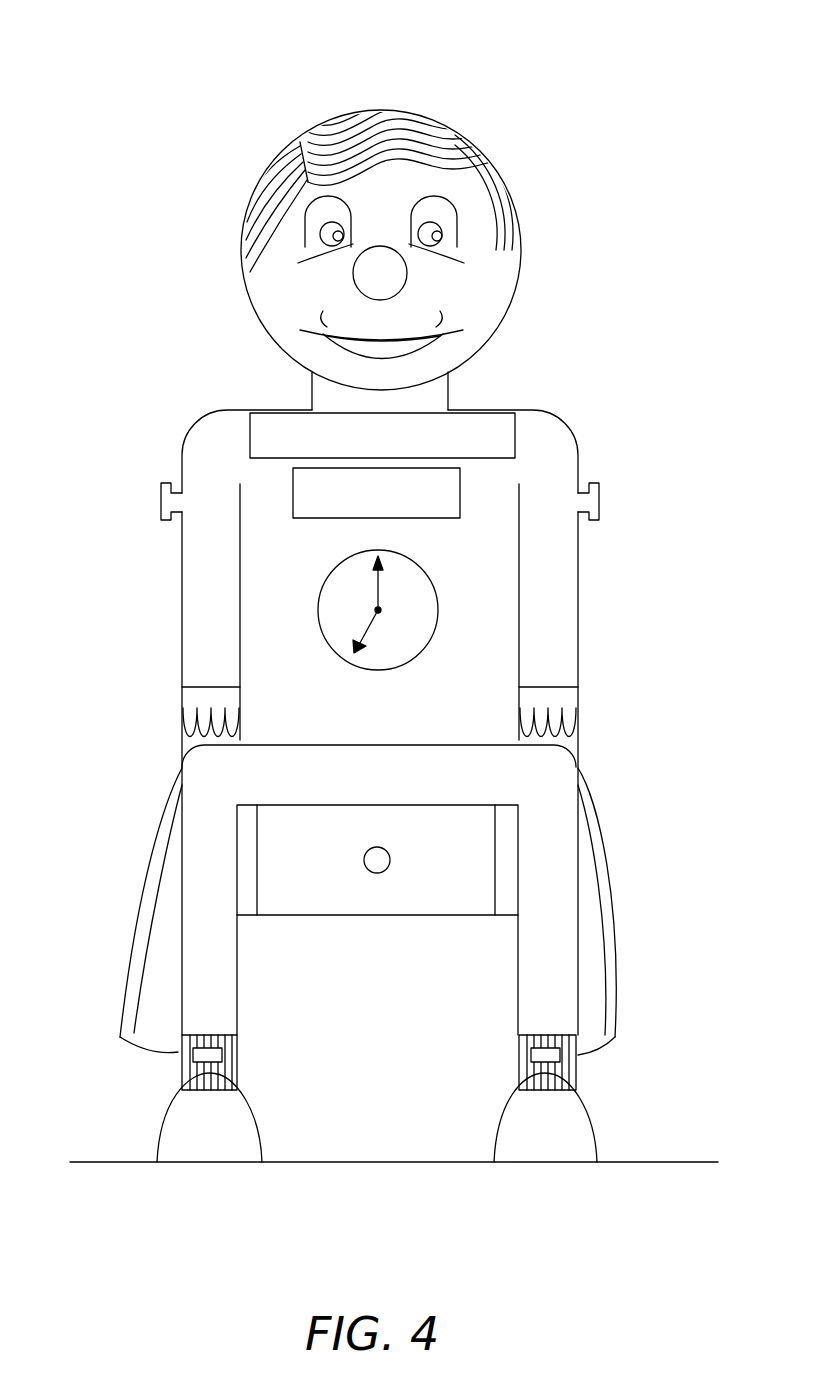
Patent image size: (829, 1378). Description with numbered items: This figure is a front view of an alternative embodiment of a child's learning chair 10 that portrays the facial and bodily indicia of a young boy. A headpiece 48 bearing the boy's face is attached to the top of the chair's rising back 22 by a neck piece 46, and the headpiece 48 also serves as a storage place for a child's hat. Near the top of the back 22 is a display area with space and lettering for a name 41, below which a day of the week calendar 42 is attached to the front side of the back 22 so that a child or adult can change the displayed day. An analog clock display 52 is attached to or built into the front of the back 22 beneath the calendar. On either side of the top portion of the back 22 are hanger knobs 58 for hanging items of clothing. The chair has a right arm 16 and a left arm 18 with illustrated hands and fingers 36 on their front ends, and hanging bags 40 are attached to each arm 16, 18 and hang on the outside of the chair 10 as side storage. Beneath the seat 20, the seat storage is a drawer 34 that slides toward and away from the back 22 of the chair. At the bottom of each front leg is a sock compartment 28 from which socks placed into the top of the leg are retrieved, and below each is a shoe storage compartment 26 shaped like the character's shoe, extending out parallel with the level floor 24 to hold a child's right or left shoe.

The learning chair 10 is at (470, 76).
The right arm 16 is at (578, 673).
The left arm 18 is at (180, 673).
The seat 20 is at (384, 744).
The back 22 is at (518, 602).
The floor 24 is at (692, 1160).
The shoe storage compartment 26 is at (188, 1127).
The sock compartment 28 is at (240, 1062).
The drawer 34 is at (418, 888).
The hands and fingers 36 is at (181, 712).
The hanging bag 40 is at (145, 908).
The name display area 41 is at (273, 430).
The day of the week calendar 42 is at (460, 493).
The neck piece 46 is at (452, 392).
The headpiece 48 is at (493, 293).
The analog clock display 52 is at (440, 612).
The hanger knob 58 is at (161, 500).